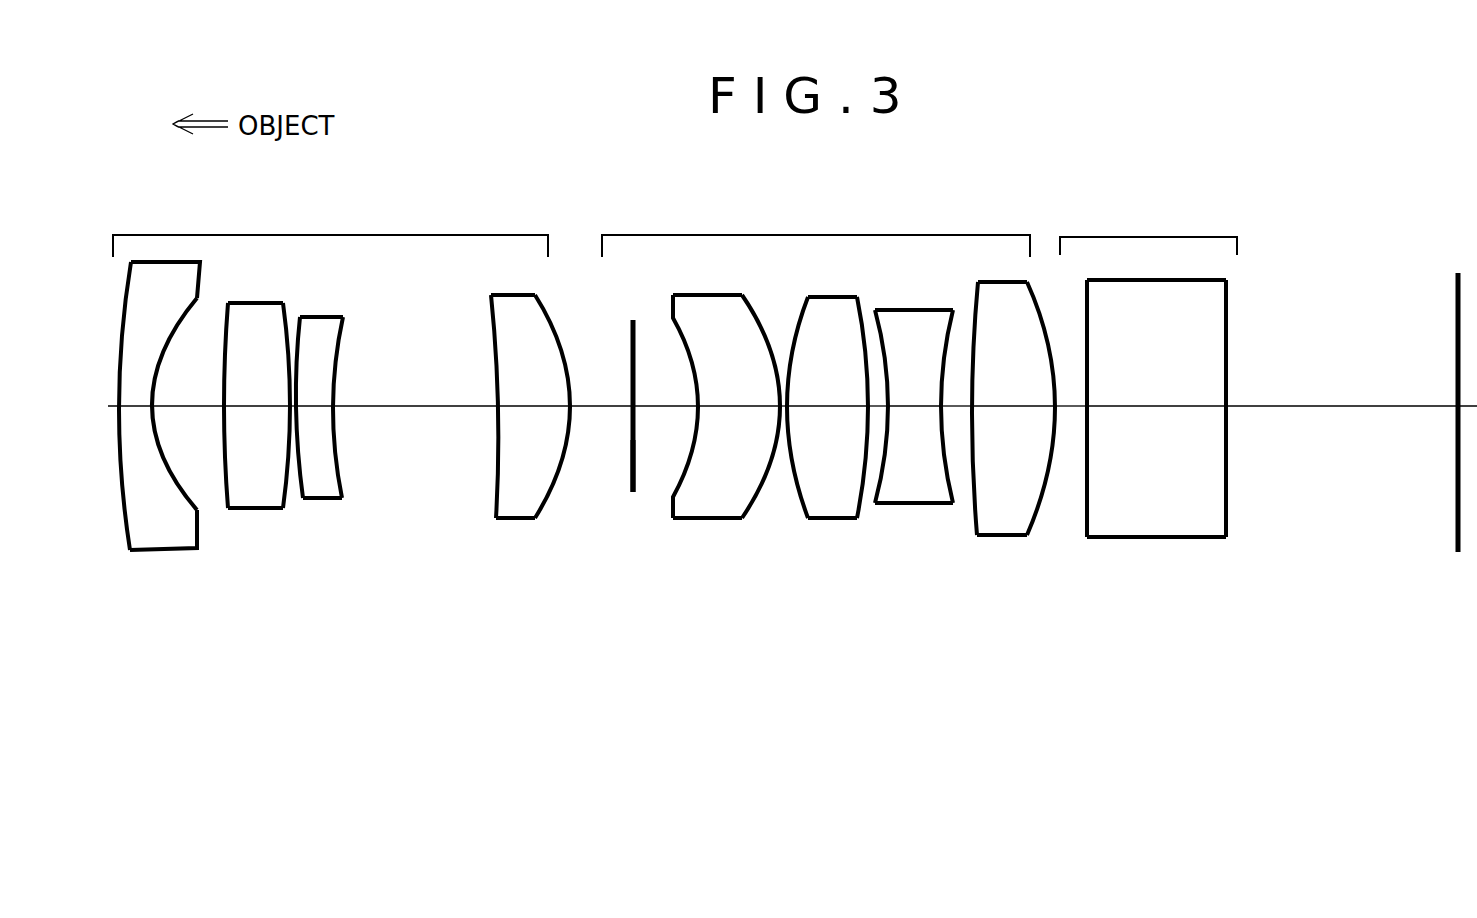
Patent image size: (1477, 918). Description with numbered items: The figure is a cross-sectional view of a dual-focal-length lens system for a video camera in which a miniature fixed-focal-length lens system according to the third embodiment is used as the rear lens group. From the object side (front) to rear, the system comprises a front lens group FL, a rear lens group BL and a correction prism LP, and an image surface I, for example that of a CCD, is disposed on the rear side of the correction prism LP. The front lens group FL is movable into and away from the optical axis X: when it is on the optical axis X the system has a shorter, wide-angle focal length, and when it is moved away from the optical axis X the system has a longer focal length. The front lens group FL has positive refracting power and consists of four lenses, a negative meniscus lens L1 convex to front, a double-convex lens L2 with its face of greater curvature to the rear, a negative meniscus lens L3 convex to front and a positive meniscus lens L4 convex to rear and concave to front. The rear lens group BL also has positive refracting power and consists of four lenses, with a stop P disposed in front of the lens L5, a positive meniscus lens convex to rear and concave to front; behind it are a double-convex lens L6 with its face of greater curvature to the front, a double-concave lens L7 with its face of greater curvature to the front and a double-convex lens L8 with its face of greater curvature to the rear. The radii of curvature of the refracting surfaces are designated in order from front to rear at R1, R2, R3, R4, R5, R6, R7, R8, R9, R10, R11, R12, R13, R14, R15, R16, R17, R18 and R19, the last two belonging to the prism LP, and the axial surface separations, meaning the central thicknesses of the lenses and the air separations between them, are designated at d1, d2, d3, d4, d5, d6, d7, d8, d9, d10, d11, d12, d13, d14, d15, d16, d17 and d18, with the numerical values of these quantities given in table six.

The front lens group FL is at (369, 424).
The rear lens group BL is at (836, 424).
The correction prism LP is at (1173, 392).
The stop P is at (613, 422).
The image surface I is at (1455, 390).
The optical axis X is at (1333, 406).
The lens L1 is at (157, 451).
The lens L2 is at (262, 476).
The lens L3 is at (352, 456).
The lens L4 is at (502, 443).
The lens L5 is at (706, 460).
The lens L6 is at (820, 467).
The lens L7 is at (918, 477).
The lens L8 is at (1030, 466).
The radius of curvature R1 is at (128, 528).
The radius of curvature R2 is at (197, 502).
The radius of curvature R3 is at (228, 505).
The radius of curvature R4 is at (285, 506).
The radius of curvature R5 is at (303, 496).
The radius of curvature R6 is at (342, 490).
The radius of curvature R7 is at (494, 492).
The radius of curvature R8 is at (547, 500).
The radius of curvature R9 is at (631, 486).
The radius of curvature R10 is at (676, 482).
The radius of curvature R11 is at (758, 515).
The radius of curvature R12 is at (805, 500).
The radius of curvature R13 is at (864, 478).
The radius of curvature R14 is at (878, 485).
The radius of curvature R15 is at (950, 485).
The radius of curvature R16 is at (977, 522).
The radius of curvature R17 is at (1034, 518).
The radius of curvature R18 is at (1087, 515).
The radius of curvature R19 is at (1227, 510).
The axial surface separation d1 is at (137, 406).
The axial surface separation d2 is at (190, 406).
The axial surface separation d3 is at (252, 406).
The axial surface separation d4 is at (293, 406).
The axial surface separation d5 is at (317, 406).
The axial surface separation d6 is at (415, 406).
The axial surface separation d7 is at (523, 406).
The axial surface separation d8 is at (595, 406).
The axial surface separation d9 is at (660, 406).
The axial surface separation d10 is at (733, 406).
The axial surface separation d11 is at (788, 406).
The axial surface separation d12 is at (820, 406).
The axial surface separation d13 is at (878, 406).
The axial surface separation d14 is at (910, 406).
The axial surface separation d15 is at (958, 406).
The axial surface separation d16 is at (1003, 406).
The axial surface separation d17 is at (1070, 406).
The axial surface separation d18 is at (1162, 406).